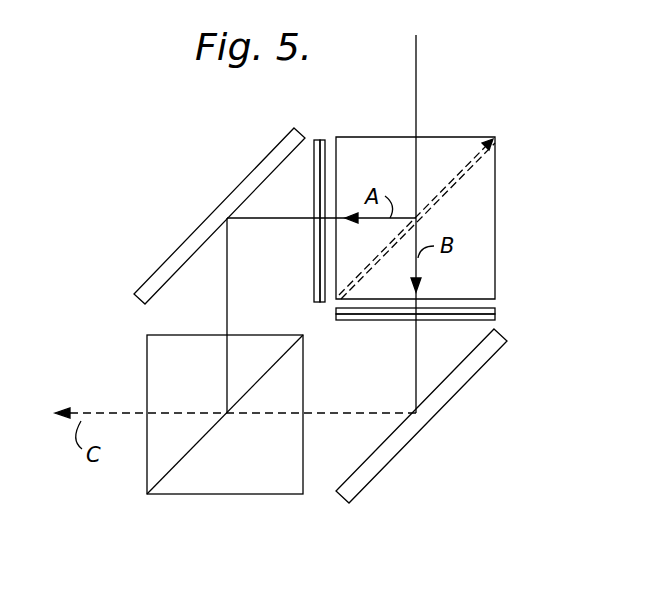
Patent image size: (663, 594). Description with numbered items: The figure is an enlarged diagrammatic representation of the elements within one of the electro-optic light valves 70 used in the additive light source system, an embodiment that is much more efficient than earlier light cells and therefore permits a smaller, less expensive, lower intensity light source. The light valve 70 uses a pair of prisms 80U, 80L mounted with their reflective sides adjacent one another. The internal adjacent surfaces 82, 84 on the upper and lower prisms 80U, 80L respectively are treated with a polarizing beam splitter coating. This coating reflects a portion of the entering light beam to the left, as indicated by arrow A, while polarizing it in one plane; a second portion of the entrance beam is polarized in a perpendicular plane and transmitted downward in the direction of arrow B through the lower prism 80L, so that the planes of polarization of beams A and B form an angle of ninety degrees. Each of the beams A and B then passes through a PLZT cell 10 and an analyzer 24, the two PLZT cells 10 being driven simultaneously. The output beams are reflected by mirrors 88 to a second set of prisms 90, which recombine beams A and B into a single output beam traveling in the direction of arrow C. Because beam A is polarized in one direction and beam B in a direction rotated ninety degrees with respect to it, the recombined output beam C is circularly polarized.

The electro-optic light valve 70 is at (447, 88).
The upper prism 80U is at (377, 148).
The lower prism 80L is at (490, 248).
The internal adjacent surface 82 is at (467, 167).
The internal adjacent surface 84 is at (458, 175).
The PLZT cell 10 is at (322, 140).
The analyzer 24 is at (315, 167).
The mirror 88 is at (190, 242).
The second set of prisms 90 is at (160, 368).